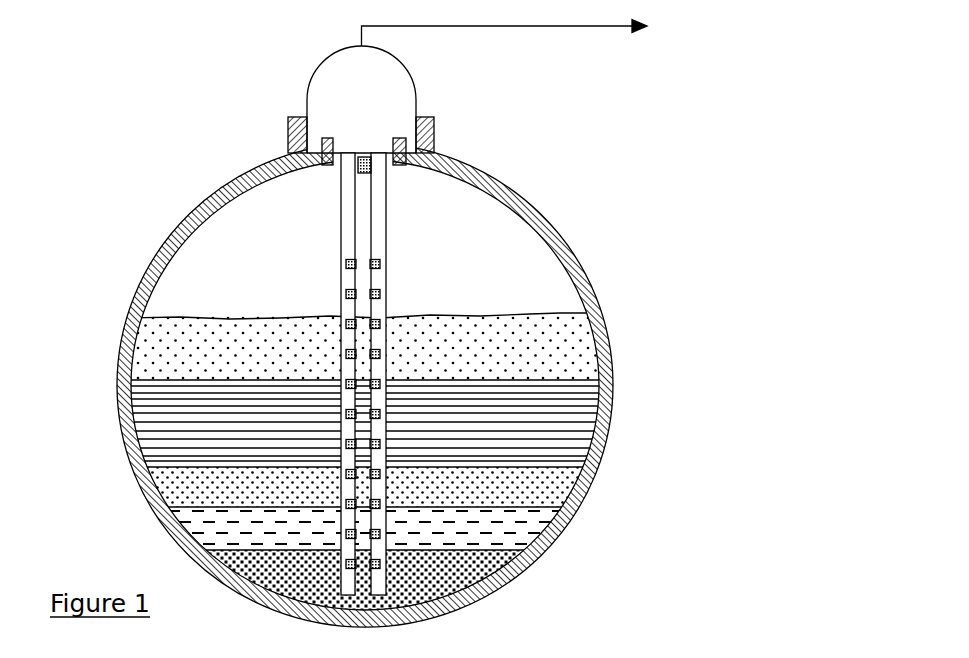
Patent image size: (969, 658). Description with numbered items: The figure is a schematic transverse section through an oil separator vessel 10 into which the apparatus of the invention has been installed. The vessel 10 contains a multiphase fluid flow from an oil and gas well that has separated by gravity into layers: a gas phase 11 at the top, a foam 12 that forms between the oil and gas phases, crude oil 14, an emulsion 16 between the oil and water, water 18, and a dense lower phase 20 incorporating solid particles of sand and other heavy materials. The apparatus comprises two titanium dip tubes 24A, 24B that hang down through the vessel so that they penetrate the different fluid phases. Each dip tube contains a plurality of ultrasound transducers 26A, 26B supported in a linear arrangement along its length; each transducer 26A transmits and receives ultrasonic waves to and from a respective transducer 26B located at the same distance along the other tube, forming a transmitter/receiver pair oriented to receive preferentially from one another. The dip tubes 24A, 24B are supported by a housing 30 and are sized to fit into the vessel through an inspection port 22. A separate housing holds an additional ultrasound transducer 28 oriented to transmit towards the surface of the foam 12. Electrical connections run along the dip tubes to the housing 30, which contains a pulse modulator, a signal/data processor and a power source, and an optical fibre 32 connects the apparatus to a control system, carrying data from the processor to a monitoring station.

The oil separator vessel 10 is at (130, 458).
The gas phase 11 is at (537, 262).
The foam 12 is at (578, 348).
The crude oil 14 is at (567, 422).
The emulsion 16 is at (542, 498).
The water 18 is at (510, 538).
The dense lower phase 20 is at (475, 573).
The inspection port 22 is at (322, 147).
The titanium dip tube 24A is at (355, 237).
The titanium dip tube 24B is at (386, 246).
The ultrasound transducers 26A is at (364, 321).
The ultrasound transducers 26B is at (364, 268).
The additional ultrasound transducer 28 is at (372, 164).
The housing 30 is at (392, 92).
The optical fibre 32 is at (563, 26).